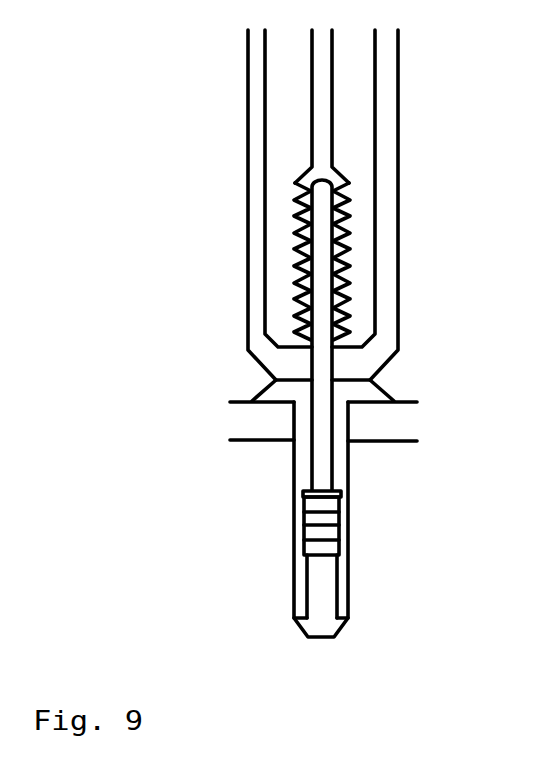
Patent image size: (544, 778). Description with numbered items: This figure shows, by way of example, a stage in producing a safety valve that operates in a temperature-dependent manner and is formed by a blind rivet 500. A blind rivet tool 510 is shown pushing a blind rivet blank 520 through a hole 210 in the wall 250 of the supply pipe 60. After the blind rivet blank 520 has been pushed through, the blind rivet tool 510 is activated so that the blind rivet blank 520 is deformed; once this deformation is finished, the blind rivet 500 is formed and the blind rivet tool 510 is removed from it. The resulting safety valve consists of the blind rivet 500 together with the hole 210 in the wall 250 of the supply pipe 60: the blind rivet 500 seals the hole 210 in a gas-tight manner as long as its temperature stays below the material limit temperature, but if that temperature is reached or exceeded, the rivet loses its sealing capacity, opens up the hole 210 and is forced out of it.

The blind rivet tool 510 is at (252, 282).
The blind rivet blank 520 is at (384, 383).
The supply pipe 60 is at (242, 415).
The wall 250 is at (253, 425).
The hole 210 is at (352, 448).
The blind rivet 500 is at (302, 585).